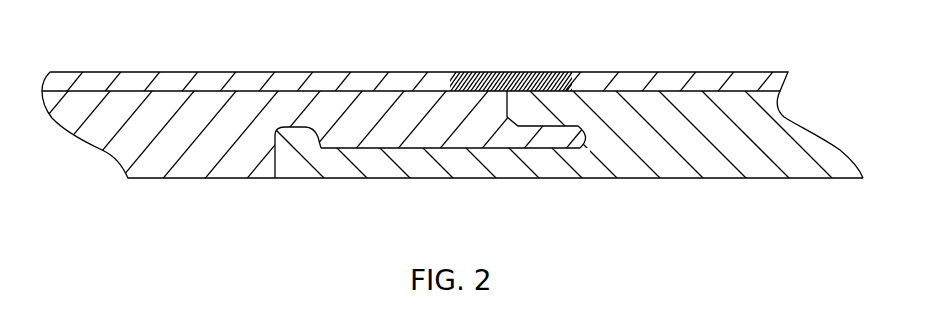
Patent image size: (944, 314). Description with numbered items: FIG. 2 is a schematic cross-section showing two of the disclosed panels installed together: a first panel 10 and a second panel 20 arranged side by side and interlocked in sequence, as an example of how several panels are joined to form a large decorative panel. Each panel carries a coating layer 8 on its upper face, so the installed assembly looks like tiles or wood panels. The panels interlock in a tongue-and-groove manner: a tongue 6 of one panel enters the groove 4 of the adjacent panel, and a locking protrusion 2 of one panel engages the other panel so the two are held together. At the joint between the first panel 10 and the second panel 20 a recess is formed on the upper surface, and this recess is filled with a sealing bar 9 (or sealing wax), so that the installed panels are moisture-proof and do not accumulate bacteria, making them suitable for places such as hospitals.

The locking protrusion 2 is at (277, 153).
The groove 4 is at (583, 136).
The tongue 6 is at (448, 152).
The coating layer 8 is at (357, 83).
The sealing bar 9 is at (467, 73).
The first panel 10 is at (707, 130).
The second panel 20 is at (217, 120).